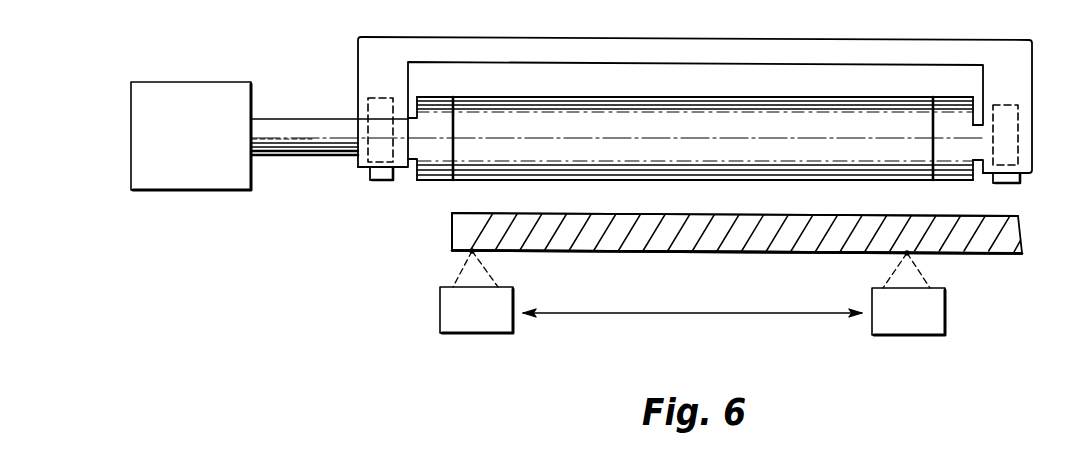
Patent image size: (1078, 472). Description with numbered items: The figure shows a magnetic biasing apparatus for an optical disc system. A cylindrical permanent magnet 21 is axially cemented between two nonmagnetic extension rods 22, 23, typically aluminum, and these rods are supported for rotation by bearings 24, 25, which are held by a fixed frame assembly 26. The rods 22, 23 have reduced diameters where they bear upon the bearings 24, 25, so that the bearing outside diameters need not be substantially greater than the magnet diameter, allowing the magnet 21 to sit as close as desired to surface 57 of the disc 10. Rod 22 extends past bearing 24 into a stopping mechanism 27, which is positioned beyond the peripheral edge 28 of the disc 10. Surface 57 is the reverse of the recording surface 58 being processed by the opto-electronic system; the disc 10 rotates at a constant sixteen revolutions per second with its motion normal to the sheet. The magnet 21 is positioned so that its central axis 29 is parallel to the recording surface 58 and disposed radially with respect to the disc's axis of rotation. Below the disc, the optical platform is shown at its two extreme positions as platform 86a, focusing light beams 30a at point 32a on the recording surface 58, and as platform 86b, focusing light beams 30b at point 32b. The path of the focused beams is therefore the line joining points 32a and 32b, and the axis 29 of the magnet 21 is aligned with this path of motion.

The disc 10 is at (700, 242).
The cylindrical permanent magnet 21 is at (682, 180).
The extension rod 22 is at (302, 157).
The extension rod 23 is at (952, 178).
The bearing 24 is at (386, 181).
The bearing 25 is at (1021, 180).
The fixed frame assembly 26 is at (1008, 42).
The stopping mechanism 27 is at (222, 191).
The peripheral edge 28 is at (452, 238).
The central axis 29 is at (731, 139).
The light beams 30a is at (493, 268).
The light beams 30b is at (925, 272).
The point 32a is at (471, 253).
The point 32b is at (905, 255).
The surface 57 is at (627, 199).
The recording surface 58 is at (653, 254).
The optical platform 86a is at (477, 334).
The optical platform 86b is at (910, 336).